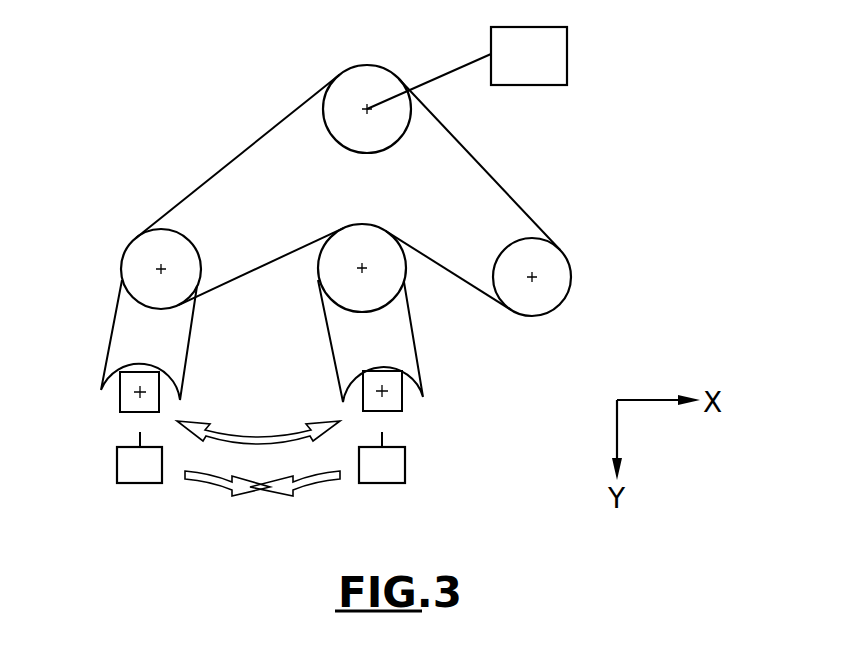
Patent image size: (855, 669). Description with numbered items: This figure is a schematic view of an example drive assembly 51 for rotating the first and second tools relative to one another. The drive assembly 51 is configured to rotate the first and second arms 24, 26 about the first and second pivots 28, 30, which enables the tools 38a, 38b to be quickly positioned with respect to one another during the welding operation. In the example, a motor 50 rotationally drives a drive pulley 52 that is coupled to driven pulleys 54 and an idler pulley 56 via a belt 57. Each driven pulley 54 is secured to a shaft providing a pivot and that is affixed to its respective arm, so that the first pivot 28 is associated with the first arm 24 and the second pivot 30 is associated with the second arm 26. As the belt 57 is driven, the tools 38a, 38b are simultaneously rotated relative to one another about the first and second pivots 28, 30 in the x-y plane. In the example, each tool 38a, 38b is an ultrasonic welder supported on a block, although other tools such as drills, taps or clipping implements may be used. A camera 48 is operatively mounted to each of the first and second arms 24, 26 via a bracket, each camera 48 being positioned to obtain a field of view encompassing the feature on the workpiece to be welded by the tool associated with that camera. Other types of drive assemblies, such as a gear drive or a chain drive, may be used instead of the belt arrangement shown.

The first arm 24 is at (113, 357).
The second arm 26 is at (408, 355).
The first pivot 28 is at (161, 269).
The second pivot 30 is at (362, 268).
The tool 38a is at (122, 407).
The tool 38b is at (400, 403).
The camera 48 is at (134, 484).
The motor 50 is at (567, 53).
The drive assembly 51 is at (590, 112).
The drive pulley 52 is at (350, 85).
The driven pulley 54 is at (135, 263).
The idler pulley 56 is at (558, 263).
The belt 57 is at (490, 180).